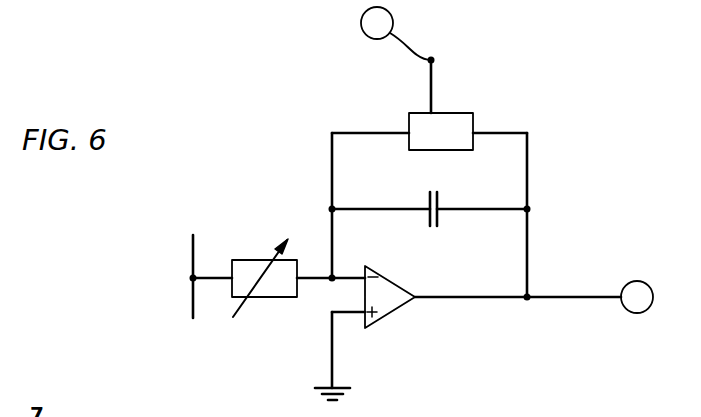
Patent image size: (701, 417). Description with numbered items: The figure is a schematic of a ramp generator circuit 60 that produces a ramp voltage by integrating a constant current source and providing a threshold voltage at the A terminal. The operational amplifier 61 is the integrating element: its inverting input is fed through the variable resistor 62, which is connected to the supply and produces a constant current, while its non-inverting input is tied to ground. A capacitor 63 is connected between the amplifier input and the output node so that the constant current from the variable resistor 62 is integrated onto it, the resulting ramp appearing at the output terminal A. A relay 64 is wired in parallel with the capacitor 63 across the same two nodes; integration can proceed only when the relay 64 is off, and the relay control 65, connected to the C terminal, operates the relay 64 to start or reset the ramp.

The relay control circuit 60 is at (608, 76).
The operational amplifier 61 is at (392, 302).
The variable resistor 62 is at (259, 297).
The capacitor 63 is at (441, 201).
The relay 64 is at (409, 113).
The relay control 65 is at (431, 60).